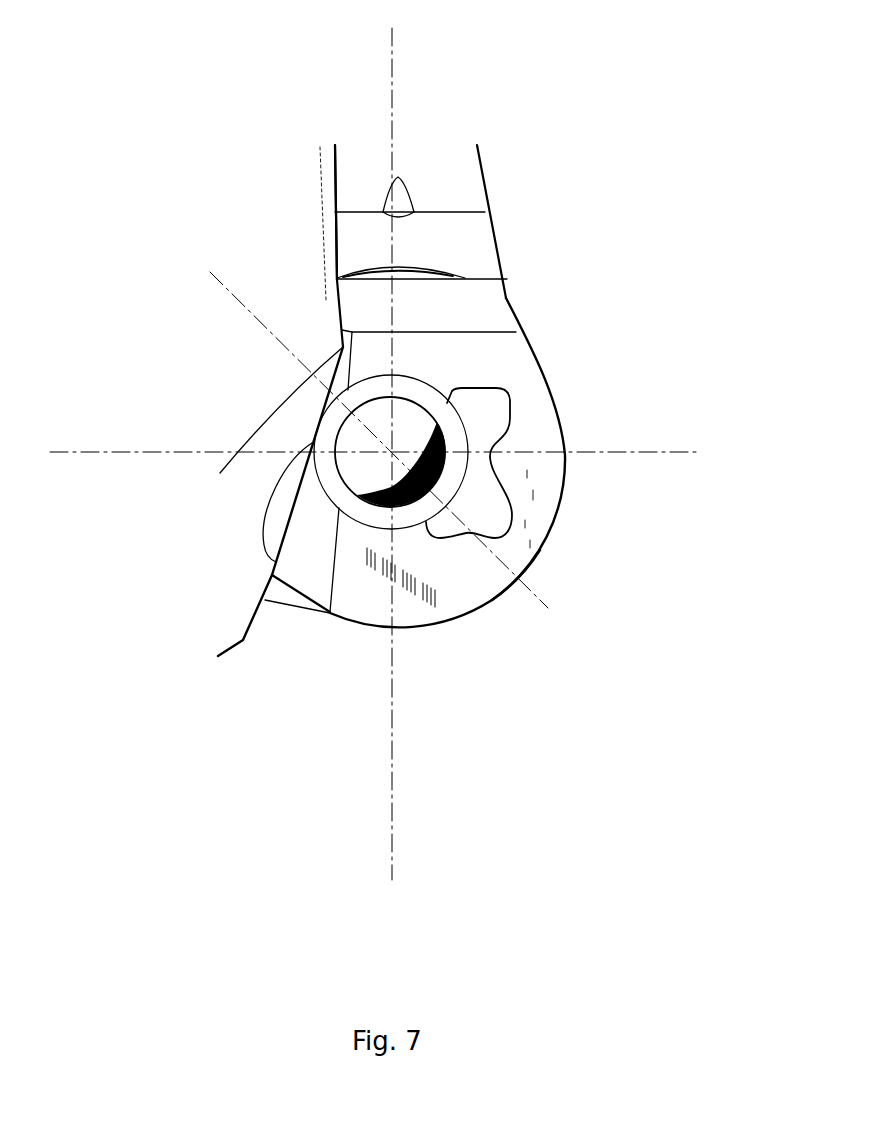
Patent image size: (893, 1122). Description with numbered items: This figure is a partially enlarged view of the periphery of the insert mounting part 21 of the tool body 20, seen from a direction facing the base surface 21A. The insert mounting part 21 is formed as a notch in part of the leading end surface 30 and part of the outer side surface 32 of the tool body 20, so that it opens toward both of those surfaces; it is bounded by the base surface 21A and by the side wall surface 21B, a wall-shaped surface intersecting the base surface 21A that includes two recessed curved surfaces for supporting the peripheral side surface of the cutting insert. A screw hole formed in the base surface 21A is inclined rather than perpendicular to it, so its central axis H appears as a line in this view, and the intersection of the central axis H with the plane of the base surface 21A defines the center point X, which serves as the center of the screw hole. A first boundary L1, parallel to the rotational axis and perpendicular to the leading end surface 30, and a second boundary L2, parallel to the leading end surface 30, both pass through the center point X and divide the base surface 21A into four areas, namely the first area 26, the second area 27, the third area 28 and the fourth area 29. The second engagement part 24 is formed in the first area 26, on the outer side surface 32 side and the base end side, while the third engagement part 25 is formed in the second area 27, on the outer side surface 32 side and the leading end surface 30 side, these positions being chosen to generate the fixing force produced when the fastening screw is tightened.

The tool body 20 is at (439, 188).
The insert mounting part 21 is at (460, 570).
The base surface 21A is at (483, 567).
The side wall surface 21B is at (417, 273).
The second engagement part 24 is at (510, 403).
The third engagement part 25 is at (510, 523).
The first area 26 is at (467, 362).
The second area 27 is at (433, 582).
The third area 28 is at (363, 577).
The fourth area 29 is at (367, 353).
The leading end surface 30 is at (382, 632).
The outer side surface 32 is at (568, 472).
The center point X is at (392, 452).
The central axis of the screw hole H is at (262, 323).
The first boundary L1 is at (390, 75).
The second boundary L2 is at (88, 450).